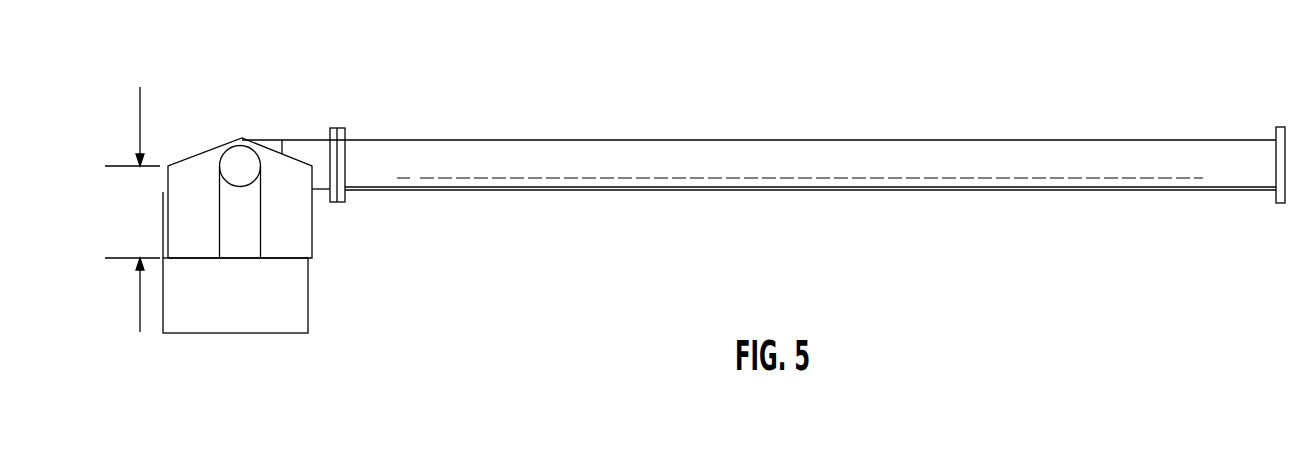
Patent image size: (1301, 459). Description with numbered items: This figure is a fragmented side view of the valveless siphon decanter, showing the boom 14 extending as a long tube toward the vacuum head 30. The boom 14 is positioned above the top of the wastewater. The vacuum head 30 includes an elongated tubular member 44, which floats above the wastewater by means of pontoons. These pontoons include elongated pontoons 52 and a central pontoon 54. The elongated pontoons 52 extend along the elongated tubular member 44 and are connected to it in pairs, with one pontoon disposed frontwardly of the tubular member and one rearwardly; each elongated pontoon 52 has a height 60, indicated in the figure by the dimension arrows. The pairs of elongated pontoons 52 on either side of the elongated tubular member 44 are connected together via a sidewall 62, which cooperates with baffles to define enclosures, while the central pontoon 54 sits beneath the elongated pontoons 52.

The boom 14 is at (737, 190).
The vacuum head 30 is at (283, 141).
The elongated tubular member 44 is at (245, 158).
The elongated pontoons 52 is at (200, 192).
The central pontoon 54 is at (273, 295).
The height 60 is at (121, 217).
The sidewall 62 is at (247, 213).